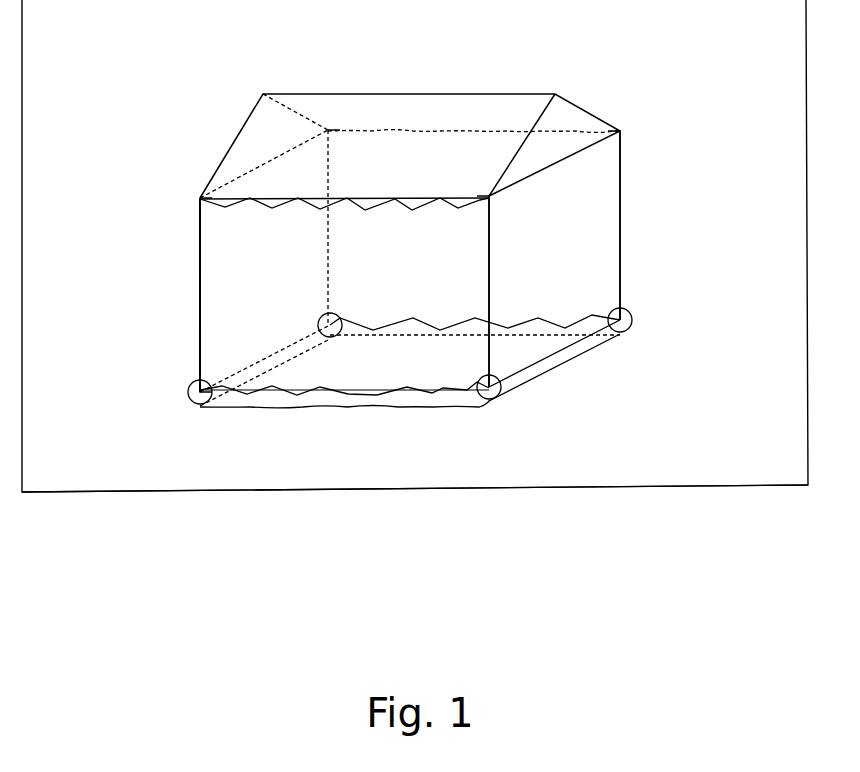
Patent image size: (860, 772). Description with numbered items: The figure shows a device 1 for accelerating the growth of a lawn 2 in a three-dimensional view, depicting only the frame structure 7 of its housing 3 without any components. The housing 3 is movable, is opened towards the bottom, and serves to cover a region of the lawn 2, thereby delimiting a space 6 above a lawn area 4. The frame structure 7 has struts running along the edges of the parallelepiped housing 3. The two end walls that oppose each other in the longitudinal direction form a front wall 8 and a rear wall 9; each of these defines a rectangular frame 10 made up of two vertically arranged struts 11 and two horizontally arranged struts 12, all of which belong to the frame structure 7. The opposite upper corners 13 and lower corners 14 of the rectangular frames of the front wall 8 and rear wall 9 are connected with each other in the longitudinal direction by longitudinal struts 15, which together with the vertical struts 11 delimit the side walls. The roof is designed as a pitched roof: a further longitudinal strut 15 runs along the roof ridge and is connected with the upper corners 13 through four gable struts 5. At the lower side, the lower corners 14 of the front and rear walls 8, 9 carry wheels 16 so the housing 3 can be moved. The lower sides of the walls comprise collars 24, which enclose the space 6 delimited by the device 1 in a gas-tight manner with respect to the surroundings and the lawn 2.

The device 1 is at (685, 62).
The lawn 2 is at (86, 473).
The housing 3 is at (623, 218).
The lawn area 4 is at (357, 402).
The gable struts 5 is at (250, 120).
The space 6 is at (344, 294).
The frame structure 7 is at (198, 222).
The front wall 8 is at (541, 336).
The rear wall 9 is at (212, 317).
The rectangular frame 10 is at (198, 288).
The vertical struts 11 is at (333, 176).
The horizontal struts 12 is at (252, 168).
The upper corners 13 is at (196, 388).
The lower corners 14 is at (196, 194).
The longitudinal struts 15 is at (418, 94).
The wheels 16 is at (190, 402).
The collars 24 is at (600, 348).